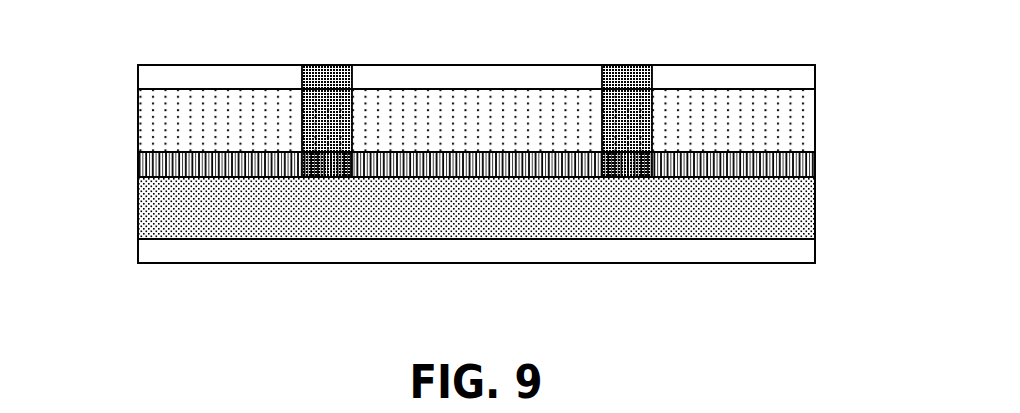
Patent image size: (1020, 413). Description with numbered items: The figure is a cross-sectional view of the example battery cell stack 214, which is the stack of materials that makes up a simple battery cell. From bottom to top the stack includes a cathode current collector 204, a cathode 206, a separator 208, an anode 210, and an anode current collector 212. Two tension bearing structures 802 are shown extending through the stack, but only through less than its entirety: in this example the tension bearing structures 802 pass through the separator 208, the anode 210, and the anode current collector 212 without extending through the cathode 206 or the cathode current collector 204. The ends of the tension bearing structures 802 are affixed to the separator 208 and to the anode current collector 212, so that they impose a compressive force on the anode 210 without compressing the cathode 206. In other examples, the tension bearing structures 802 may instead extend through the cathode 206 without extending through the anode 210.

The cathode current collector 204 is at (805, 253).
The cathode 206 is at (805, 210).
The separator 208 is at (805, 165).
The anode 210 is at (805, 122).
The anode current collector 212 is at (805, 78).
The battery cell stack 214 is at (133, 65).
The tension bearing structures 802 is at (335, 128).